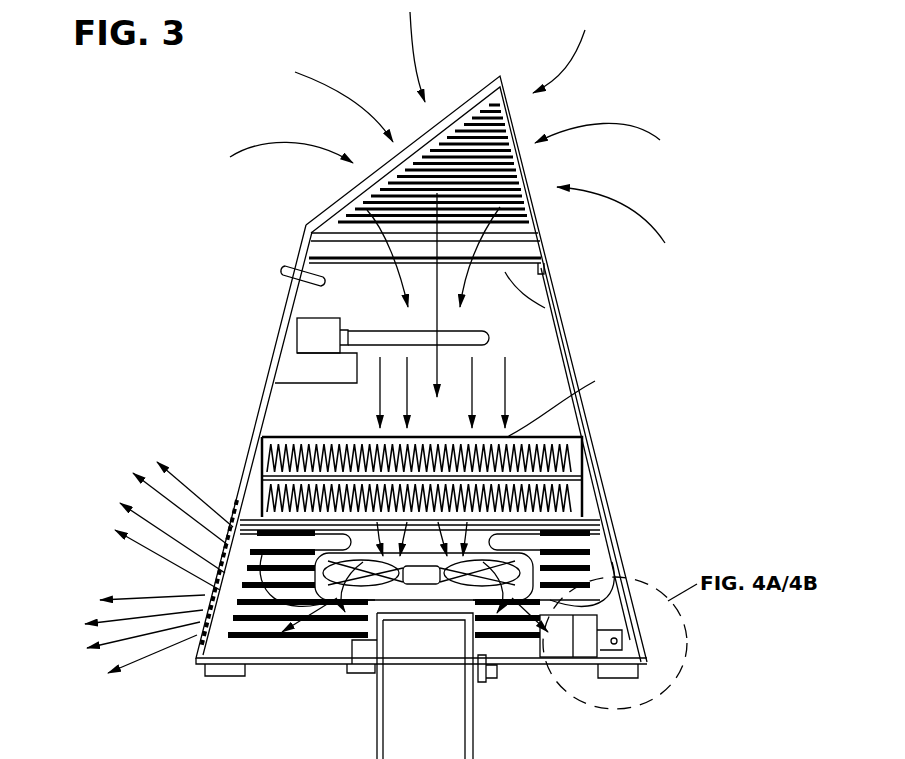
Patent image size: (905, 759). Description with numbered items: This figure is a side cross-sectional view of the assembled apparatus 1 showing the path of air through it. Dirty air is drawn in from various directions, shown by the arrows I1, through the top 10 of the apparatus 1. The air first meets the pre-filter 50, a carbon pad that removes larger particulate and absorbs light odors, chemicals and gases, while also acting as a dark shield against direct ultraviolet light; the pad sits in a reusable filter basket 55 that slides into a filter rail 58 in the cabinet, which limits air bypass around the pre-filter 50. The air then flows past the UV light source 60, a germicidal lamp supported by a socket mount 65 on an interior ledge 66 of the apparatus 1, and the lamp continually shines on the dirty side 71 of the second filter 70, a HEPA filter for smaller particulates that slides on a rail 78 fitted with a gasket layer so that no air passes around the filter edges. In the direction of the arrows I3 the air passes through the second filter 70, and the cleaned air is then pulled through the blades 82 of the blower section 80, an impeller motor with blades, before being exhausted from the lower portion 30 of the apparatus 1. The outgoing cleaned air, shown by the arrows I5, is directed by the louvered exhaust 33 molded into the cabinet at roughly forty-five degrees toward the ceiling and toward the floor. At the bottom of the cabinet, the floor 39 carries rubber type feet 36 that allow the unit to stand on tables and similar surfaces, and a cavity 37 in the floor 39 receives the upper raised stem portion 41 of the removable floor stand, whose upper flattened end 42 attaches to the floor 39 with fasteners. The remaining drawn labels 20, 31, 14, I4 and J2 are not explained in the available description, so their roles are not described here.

The apparatus/cabinet 1 is at (85, 278).
The top of the apparatus 10 is at (657, 163).
The heat exchanger 20 is at (456, 460).
The lower portion of the apparatus 30 is at (680, 378).
The inlet 31 is at (290, 278).
The louvered exhaust 33 is at (200, 627).
The rubber type feet 36 is at (210, 677).
The cavity in the floor 37 is at (362, 650).
The floor of the cabinet 39 is at (278, 661).
The upper raised stem portion 41 is at (458, 633).
The upper flattened end 42 is at (490, 675).
The pre-filter 50 is at (520, 251).
The filter basket 55 is at (308, 250).
The filter rail 58 is at (557, 307).
The UV light source 60 is at (484, 337).
The socket mount 65 is at (307, 342).
The interior ledge 66 is at (313, 371).
The second filter 70 is at (570, 476).
The dirty side of the HEPA filter 71 is at (566, 403).
The filter rail 78 is at (571, 512).
The blower section 80 is at (459, 558).
The blower blades 82 is at (355, 592).
The fan 14 is at (437, 577).
The inlet air flow arrows I1 is at (447, 127).
The air flow arrows through second filter I3 is at (407, 392).
The fan air flow I4 is at (421, 582).
The exhaust air flow arrows I5 is at (159, 567).
The air flow through filter J2 is at (427, 295).